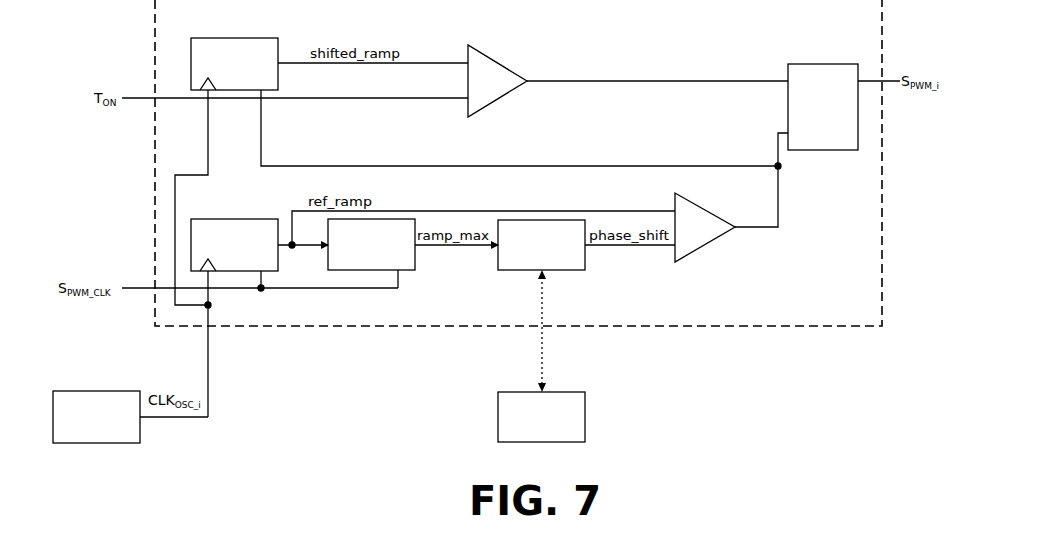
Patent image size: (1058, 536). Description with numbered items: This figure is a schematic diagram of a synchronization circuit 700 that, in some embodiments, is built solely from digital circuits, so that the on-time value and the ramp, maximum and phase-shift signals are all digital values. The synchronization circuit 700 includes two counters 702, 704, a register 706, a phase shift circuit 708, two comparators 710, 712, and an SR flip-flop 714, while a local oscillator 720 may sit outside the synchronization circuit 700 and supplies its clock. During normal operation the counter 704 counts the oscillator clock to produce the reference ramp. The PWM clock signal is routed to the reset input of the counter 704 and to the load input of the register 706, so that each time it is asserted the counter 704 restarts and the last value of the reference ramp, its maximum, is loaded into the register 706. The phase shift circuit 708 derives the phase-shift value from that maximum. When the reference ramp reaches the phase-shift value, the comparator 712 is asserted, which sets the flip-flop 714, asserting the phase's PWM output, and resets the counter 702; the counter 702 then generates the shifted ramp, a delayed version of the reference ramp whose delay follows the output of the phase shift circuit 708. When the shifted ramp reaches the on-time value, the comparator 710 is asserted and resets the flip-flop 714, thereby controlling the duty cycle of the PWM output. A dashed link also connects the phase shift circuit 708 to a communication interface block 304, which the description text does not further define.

The synchronization circuit 700 is at (151, 28).
The counter 702 is at (239, 38).
The counter 704 is at (219, 219).
The register 706 is at (415, 262).
The phase shift circuit 708 is at (585, 262).
The comparator 710 is at (492, 59).
The comparator 712 is at (701, 209).
The SR flip-flop 714 is at (808, 64).
The local oscillator 720 is at (88, 391).
The communication interface 304 is at (498, 432).